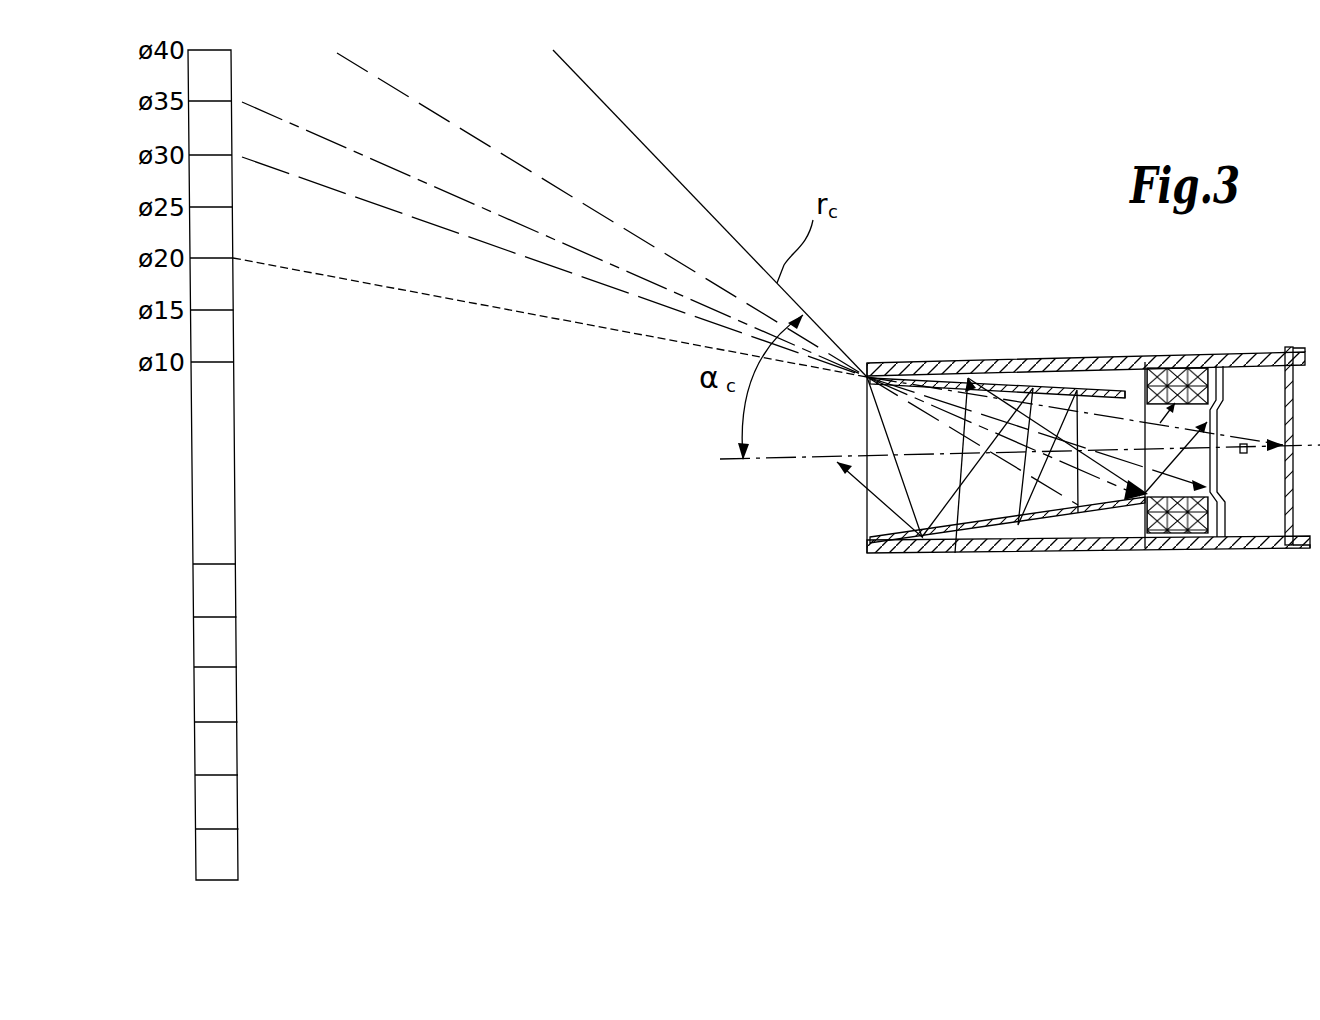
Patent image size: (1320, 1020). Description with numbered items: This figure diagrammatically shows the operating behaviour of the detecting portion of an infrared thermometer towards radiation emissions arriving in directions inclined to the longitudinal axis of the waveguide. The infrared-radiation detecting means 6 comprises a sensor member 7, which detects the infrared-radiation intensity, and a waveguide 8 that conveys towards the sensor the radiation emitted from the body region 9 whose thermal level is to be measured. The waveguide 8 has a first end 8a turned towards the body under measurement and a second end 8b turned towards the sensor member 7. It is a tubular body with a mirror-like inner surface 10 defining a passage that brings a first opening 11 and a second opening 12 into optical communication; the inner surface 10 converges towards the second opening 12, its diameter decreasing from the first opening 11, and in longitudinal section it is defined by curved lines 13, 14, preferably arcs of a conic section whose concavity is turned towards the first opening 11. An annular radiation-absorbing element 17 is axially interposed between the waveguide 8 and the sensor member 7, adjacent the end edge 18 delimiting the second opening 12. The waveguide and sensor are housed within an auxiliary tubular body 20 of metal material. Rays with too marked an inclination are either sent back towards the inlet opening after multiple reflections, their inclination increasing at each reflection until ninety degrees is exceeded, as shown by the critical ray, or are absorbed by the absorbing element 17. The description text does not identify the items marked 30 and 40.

The infrared-radiation detecting means 6 is at (860, 588).
The sensor member 7 is at (1243, 455).
The waveguide 8 is at (1040, 388).
The first end 8a is at (873, 540).
The second end 8b is at (1122, 394).
The body region 9 is at (1217, 545).
The mirror-like inner surface 10 is at (955, 553).
The first opening 11 is at (882, 422).
The second opening 12 is at (1144, 430).
The curved line 13 is at (962, 378).
The curved line 14 is at (1038, 521).
The radiation-absorbing element 17 is at (1172, 533).
The end edge 18 is at (1138, 500).
The auxiliary tubular body 20 is at (900, 363).
The housing wall 30 is at (876, 540).
The light emitting element 40 is at (1150, 402).